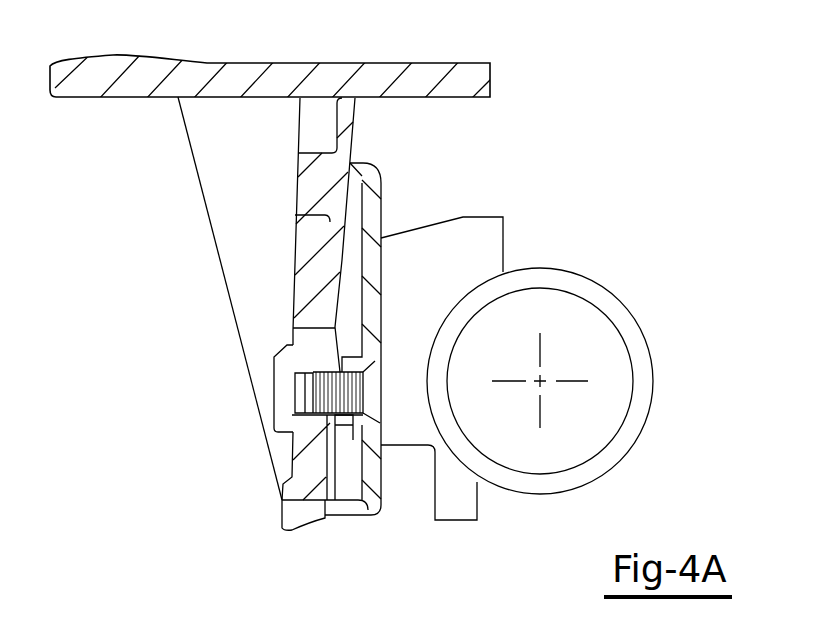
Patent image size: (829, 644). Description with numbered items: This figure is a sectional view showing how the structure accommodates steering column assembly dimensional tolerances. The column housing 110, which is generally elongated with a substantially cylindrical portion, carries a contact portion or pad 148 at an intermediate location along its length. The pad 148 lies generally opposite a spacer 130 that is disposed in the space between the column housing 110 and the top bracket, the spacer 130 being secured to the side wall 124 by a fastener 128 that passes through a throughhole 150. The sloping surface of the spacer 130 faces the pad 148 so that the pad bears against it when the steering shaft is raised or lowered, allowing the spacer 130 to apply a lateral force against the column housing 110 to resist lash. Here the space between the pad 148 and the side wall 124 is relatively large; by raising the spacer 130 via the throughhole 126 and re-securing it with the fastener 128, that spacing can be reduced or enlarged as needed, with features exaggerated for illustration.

The column housing 110 is at (653, 392).
The side wall 124 is at (322, 97).
The throughhole 126 is at (300, 328).
The fastener 128 is at (287, 369).
The spacer 130 is at (337, 516).
The pad 148 is at (482, 217).
The throughhole 150 is at (340, 426).